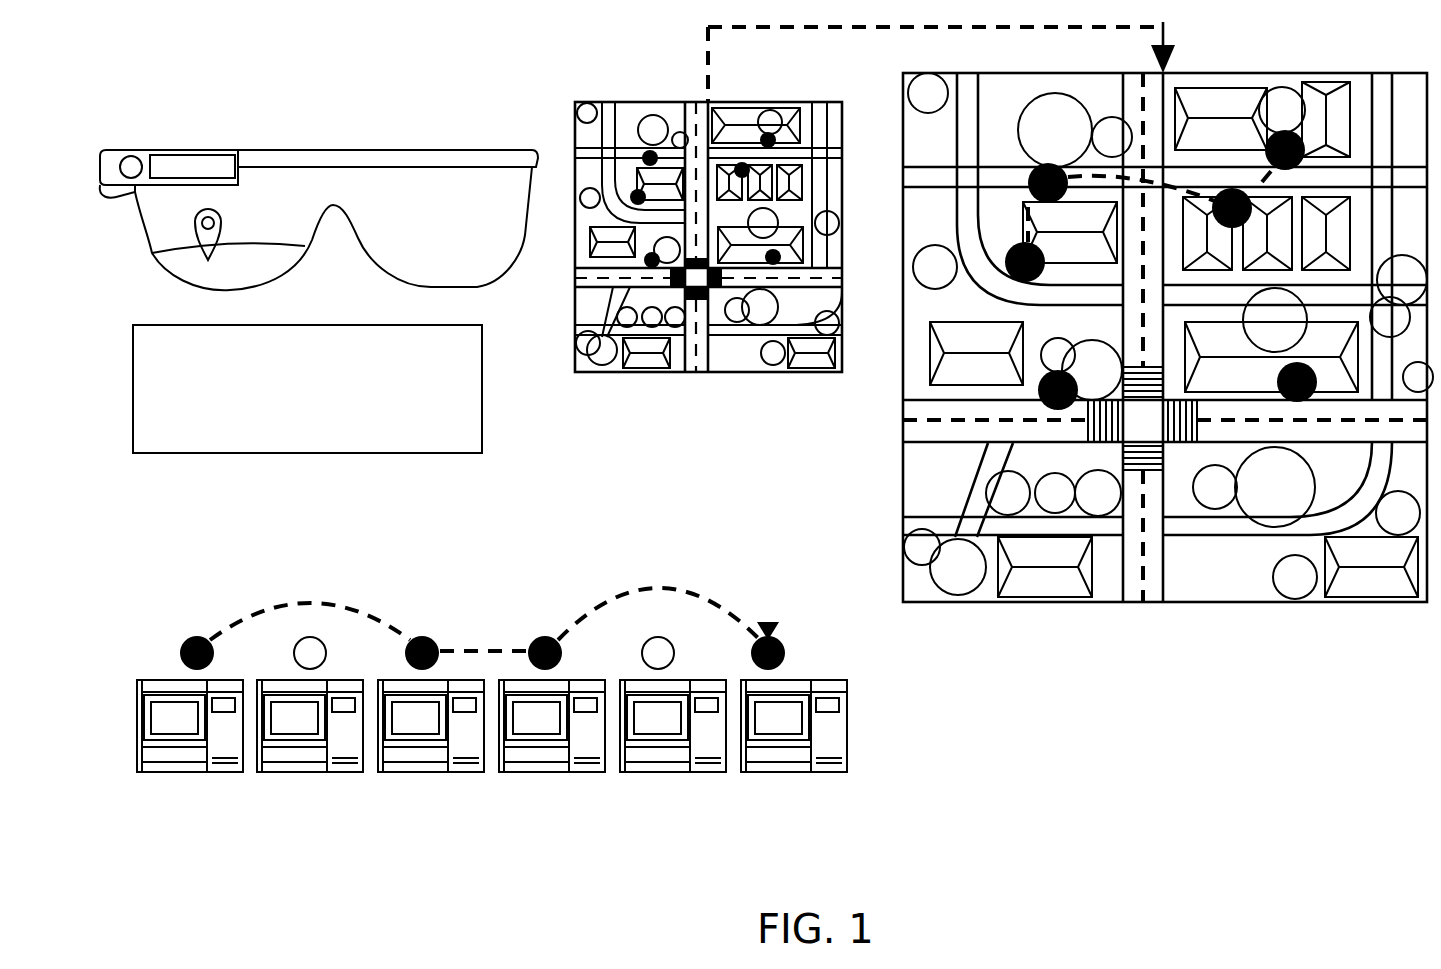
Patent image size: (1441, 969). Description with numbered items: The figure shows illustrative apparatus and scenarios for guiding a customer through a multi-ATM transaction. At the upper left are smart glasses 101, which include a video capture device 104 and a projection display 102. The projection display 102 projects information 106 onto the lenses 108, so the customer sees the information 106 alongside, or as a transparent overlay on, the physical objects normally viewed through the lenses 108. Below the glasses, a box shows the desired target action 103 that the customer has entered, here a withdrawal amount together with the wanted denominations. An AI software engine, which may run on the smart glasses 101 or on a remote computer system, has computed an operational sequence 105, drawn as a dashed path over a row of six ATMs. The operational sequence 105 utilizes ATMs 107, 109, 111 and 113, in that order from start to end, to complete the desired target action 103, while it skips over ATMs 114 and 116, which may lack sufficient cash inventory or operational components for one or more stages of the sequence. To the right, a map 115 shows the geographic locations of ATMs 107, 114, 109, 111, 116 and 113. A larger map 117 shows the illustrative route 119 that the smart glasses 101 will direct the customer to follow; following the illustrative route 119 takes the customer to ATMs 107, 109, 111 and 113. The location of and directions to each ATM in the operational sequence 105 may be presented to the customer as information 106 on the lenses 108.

The smart glasses 101 is at (329, 201).
The projection display 102 is at (195, 155).
The desired target action 103 is at (327, 325).
The video capture device 104 is at (130, 154).
The operational sequence 105 is at (480, 592).
The information 106 is at (170, 272).
The ATM 107 is at (175, 762).
The lenses 108 is at (502, 268).
The ATM 109 is at (419, 762).
The ATM 111 is at (541, 762).
The ATM 113 is at (782, 762).
The ATM 114 is at (297, 762).
The map 115 is at (680, 372).
The ATM 116 is at (661, 762).
The map 117 is at (1168, 318).
The illustrative route 119 is at (1175, 187).